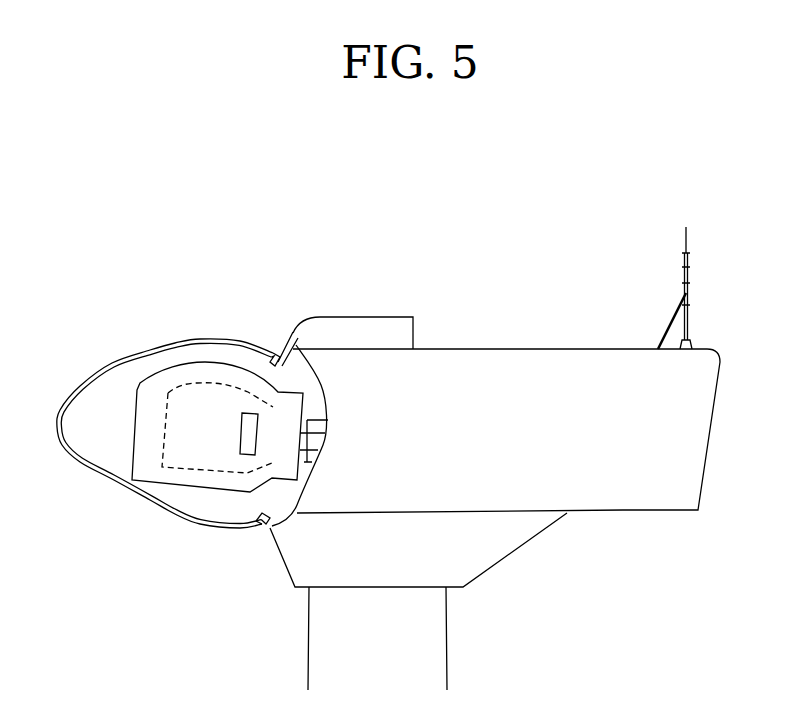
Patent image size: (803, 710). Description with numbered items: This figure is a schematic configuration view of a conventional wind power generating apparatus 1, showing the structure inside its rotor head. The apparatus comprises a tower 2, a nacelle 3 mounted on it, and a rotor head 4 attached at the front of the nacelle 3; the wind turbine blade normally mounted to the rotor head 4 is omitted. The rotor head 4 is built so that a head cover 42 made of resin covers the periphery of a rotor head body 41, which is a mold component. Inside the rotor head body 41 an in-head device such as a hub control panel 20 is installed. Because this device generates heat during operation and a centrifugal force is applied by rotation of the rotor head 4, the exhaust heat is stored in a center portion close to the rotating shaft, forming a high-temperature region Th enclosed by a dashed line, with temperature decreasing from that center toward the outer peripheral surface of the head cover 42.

The wind power generating apparatus 1 is at (628, 177).
The tower 2 is at (425, 644).
The nacelle 3 is at (549, 349).
The rotor head 4 is at (76, 502).
The rotor head body 41 is at (165, 370).
The head cover 42 is at (110, 362).
The hub control panel 20 is at (247, 418).
The high-temperature region Th is at (197, 472).